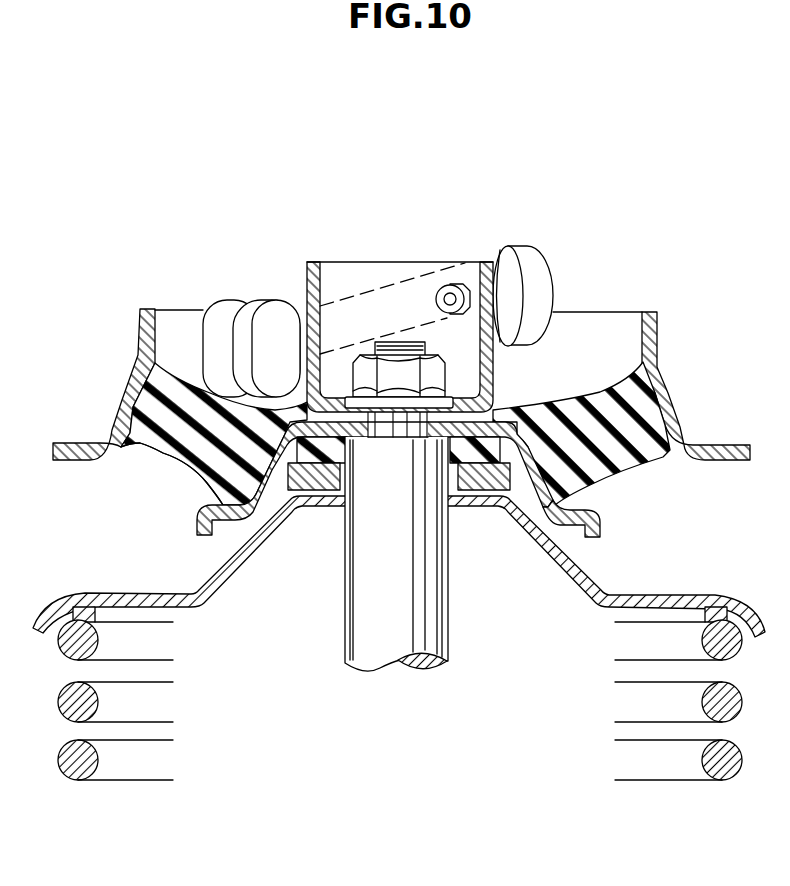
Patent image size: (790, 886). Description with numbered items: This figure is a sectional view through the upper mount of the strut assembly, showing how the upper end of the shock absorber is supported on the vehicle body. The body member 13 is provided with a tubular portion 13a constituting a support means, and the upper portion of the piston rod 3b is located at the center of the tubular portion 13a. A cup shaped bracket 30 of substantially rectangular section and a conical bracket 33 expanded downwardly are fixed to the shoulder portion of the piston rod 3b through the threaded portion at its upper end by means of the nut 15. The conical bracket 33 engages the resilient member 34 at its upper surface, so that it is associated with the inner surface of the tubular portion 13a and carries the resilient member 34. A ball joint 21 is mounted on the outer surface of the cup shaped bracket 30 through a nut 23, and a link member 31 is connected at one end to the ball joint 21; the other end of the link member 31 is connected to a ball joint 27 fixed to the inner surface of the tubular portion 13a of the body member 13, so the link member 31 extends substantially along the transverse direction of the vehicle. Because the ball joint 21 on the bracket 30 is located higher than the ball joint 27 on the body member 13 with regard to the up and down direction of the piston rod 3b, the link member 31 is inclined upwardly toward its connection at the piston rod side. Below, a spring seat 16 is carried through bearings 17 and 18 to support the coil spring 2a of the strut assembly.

The body member 13 is at (105, 360).
The tubular portion 13a is at (157, 362).
The ball joint 27 is at (253, 307).
The cup shaped bracket 30 is at (313, 282).
The link member 31 is at (382, 300).
The nut 23 is at (458, 281).
The ball joint 21 is at (532, 257).
The nut 15 is at (437, 377).
The resilient member 34 is at (633, 410).
The conical bracket 33 is at (217, 480).
The bearing 17 is at (560, 465).
The bearing 18 is at (573, 497).
The spring seat 16 is at (210, 573).
The piston rod 3b is at (437, 545).
The coil spring 2a is at (720, 782).